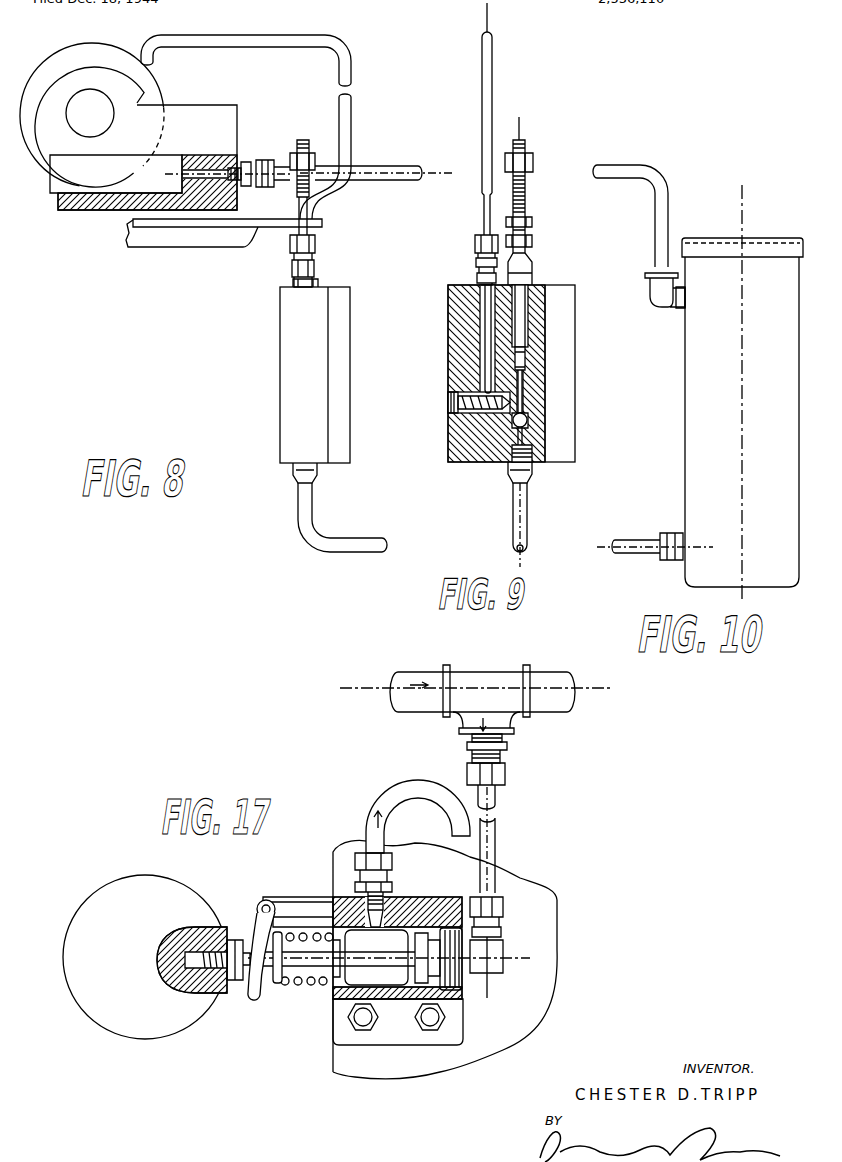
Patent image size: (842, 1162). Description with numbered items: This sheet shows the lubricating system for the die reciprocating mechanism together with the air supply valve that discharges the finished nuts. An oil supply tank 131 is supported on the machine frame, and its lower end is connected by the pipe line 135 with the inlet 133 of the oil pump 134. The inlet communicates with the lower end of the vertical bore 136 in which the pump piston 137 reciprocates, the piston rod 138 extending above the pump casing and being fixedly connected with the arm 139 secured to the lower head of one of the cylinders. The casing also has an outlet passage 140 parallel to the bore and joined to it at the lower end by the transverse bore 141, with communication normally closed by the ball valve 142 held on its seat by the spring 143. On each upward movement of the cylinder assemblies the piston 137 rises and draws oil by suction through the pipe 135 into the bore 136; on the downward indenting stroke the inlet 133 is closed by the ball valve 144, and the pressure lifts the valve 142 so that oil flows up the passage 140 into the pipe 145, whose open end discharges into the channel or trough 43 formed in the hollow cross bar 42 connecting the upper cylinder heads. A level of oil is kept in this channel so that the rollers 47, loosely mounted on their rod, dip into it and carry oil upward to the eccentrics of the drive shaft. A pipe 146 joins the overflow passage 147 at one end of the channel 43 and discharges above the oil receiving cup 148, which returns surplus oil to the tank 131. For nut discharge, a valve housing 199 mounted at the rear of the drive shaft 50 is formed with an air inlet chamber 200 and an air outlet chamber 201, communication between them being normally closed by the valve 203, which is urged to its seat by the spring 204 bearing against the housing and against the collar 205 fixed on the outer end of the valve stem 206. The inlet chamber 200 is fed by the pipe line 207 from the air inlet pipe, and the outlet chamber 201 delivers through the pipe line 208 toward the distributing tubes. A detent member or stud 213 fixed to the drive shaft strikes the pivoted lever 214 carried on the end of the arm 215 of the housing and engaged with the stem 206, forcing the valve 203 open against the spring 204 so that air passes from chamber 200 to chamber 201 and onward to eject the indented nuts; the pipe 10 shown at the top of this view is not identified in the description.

In FIG. 8, the roller 47 is at (31, 76).
In FIG. 8, the lubricant receiving channel 43 is at (125, 183).
In FIG. 8, the hollow cross bar 42 is at (160, 210).
In FIG. 8, the arm 139 is at (260, 227).
In FIG. 8, the overflow passage 147 is at (213, 158).
In FIG. 8, the pipe 146 is at (367, 172).
In FIG. 10, the pipe 146 is at (652, 172).
In FIG. 8, the piston rod 138 is at (302, 140).
In FIG. 9, the piston rod 138 is at (527, 205).
In FIG. 8, the pipe 145 is at (272, 38).
In FIG. 9, the pipe 145 is at (517, 198).
In FIG. 8, the oil pump 134 is at (280, 355).
In FIG. 9, the oil pump 134 is at (547, 340).
In FIG. 8, the pipe line 135 is at (342, 535).
In FIG. 9, the pipe line 135 is at (523, 535).
In FIG. 10, the pipe line 135 is at (608, 512).
In FIG. 9, the outlet passage 140 is at (485, 327).
In FIG. 9, the vertical bore 136 is at (522, 385).
In FIG. 9, the ball valve 142 is at (517, 423).
In FIG. 9, the transverse bore 141 is at (513, 400).
In FIG. 9, the spring 143 is at (445, 402).
In FIG. 9, the pump piston 137 is at (520, 355).
In FIG. 9, the inlet 133 is at (523, 430).
In FIG. 9, the ball valve 144 is at (512, 462).
In FIG. 10, the oil supply tank 131 is at (699, 385).
In FIG. 10, the oil receiving cup 148 is at (682, 258).
In FIG. 17, the pipe 10 is at (548, 705).
In FIG. 17, the pipe line 207 is at (495, 823).
In FIG. 17, the pipe line 208 is at (380, 790).
In FIG. 17, the valve housing 199 is at (440, 897).
In FIG. 17, the air outlet chamber 201 is at (335, 992).
In FIG. 17, the valve stem 206 is at (383, 960).
In FIG. 17, the valve 203 is at (478, 983).
In FIG. 17, the air inlet chamber 200 is at (507, 907).
In FIG. 17, the arm 215 is at (277, 897).
In FIG. 17, the spring 204 is at (302, 933).
In FIG. 17, the collar 205 is at (275, 983).
In FIG. 17, the drive shaft 50 is at (73, 912).
In FIG. 17, the detent member or stud 213 is at (252, 927).
In FIG. 17, the pivoted lever 214 is at (247, 990).